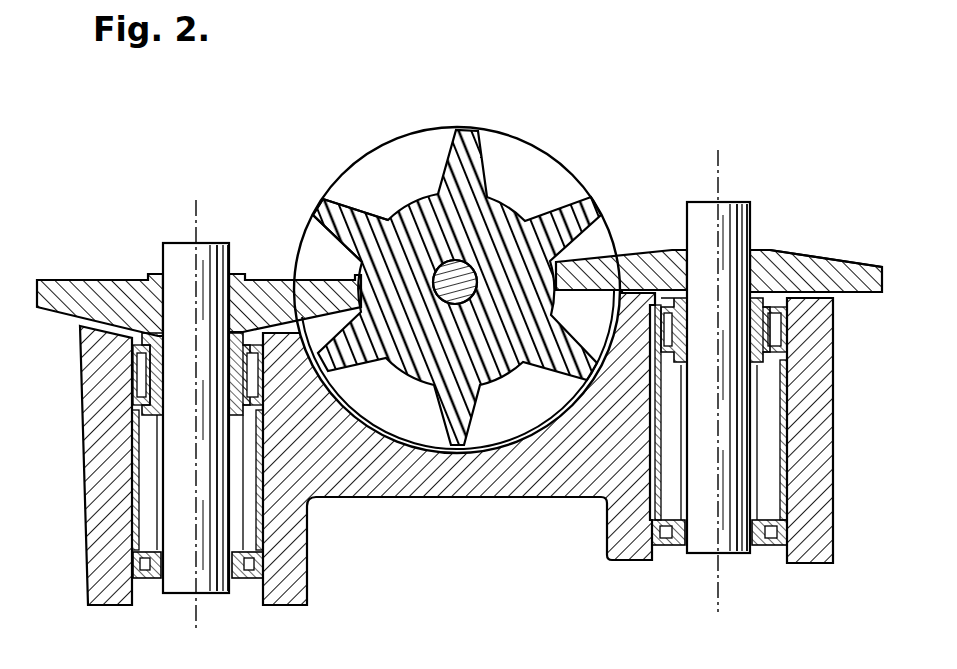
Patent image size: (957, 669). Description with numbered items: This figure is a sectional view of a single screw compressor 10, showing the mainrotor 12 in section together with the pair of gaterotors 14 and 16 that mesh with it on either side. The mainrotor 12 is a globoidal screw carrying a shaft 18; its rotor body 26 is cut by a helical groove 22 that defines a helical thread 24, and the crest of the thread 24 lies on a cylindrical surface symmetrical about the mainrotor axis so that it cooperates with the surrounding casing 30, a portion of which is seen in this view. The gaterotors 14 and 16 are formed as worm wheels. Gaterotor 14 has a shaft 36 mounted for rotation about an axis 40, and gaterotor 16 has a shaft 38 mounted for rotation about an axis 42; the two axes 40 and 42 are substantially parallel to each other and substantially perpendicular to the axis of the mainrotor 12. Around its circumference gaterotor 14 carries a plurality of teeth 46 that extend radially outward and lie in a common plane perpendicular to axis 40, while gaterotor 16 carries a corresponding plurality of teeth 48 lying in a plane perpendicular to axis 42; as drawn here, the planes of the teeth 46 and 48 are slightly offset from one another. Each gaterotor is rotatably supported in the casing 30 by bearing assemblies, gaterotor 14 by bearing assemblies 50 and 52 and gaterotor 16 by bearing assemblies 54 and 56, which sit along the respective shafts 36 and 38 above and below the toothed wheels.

The single screw compressor 10 is at (550, 114).
The mainrotor 12 is at (455, 124).
The gaterotor 14 is at (46, 276).
The gaterotor 16 is at (858, 258).
The shaft 18 is at (477, 272).
The helical groove 22 is at (398, 213).
The helical thread 24 is at (318, 207).
The rotor body 26 is at (493, 130).
The casing 30 is at (398, 480).
The shaft 36 is at (175, 244).
The shaft 38 is at (729, 203).
The axis of rotation 40 is at (198, 217).
The axis of rotation 42 is at (717, 170).
The teeth 46 is at (95, 280).
The teeth 48 is at (825, 264).
The bearing assembly 50 is at (142, 378).
The bearing assembly 52 is at (135, 566).
The bearing assembly 54 is at (773, 334).
The bearing assembly 56 is at (780, 530).